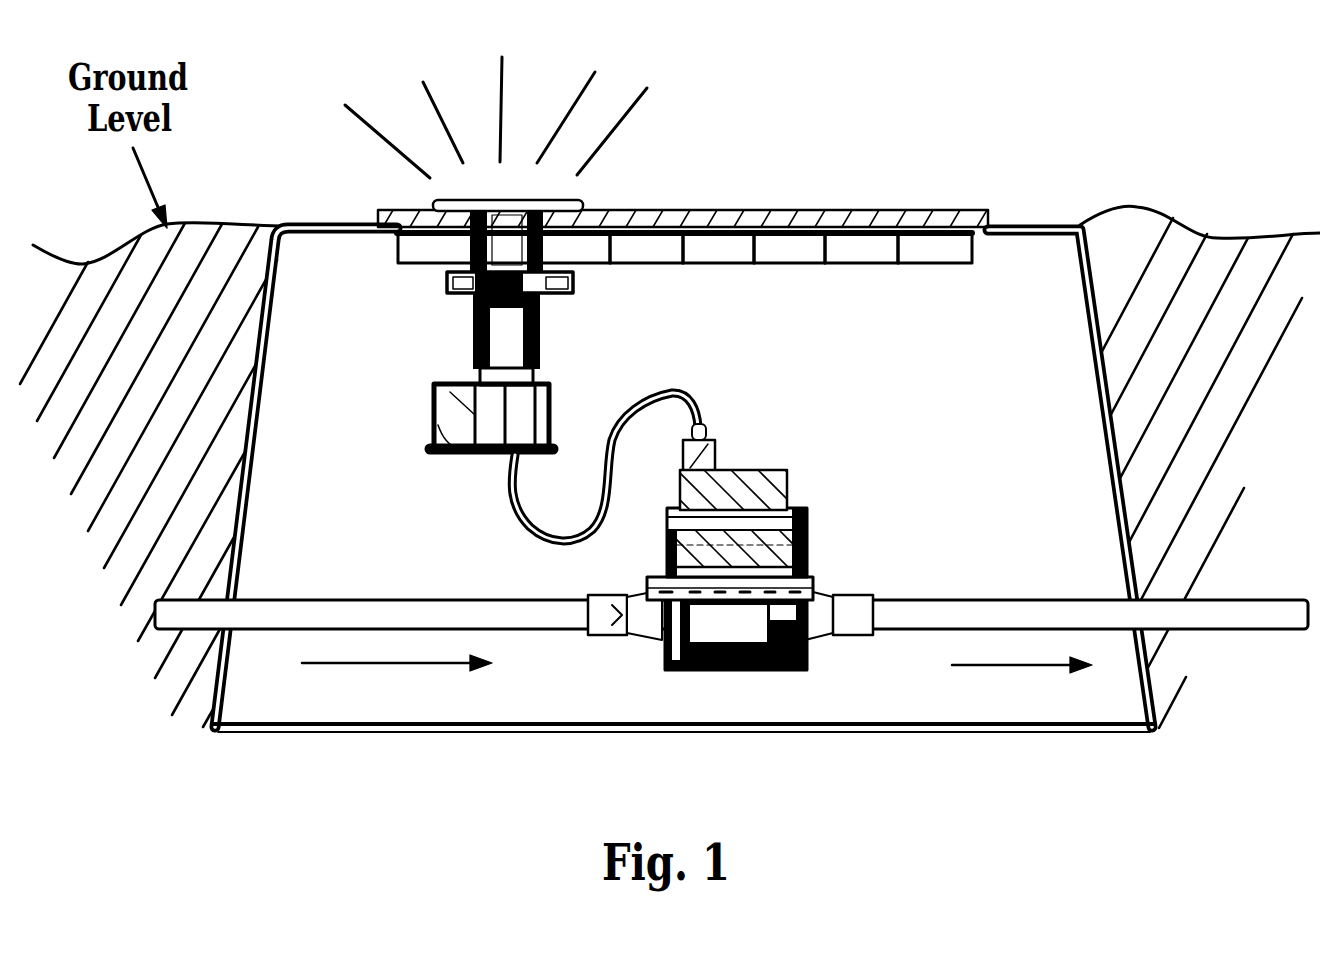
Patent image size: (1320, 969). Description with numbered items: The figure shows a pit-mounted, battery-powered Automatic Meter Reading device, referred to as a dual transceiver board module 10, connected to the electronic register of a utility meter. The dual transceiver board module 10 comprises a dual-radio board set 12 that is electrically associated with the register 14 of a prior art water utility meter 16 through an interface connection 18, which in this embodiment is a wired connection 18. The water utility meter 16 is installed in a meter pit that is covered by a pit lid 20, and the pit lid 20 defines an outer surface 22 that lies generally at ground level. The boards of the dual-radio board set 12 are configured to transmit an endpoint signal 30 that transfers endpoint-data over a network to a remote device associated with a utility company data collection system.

The dual transceiver board module 10 is at (491, 344).
The dual-radio board set 12 is at (505, 340).
The register 14 is at (787, 490).
The water utility meter 16 is at (884, 535).
The interface connection 18 is at (698, 424).
The pit lid 20 is at (990, 223).
The outer surface 22 is at (889, 195).
The endpoint signal 30 is at (652, 153).